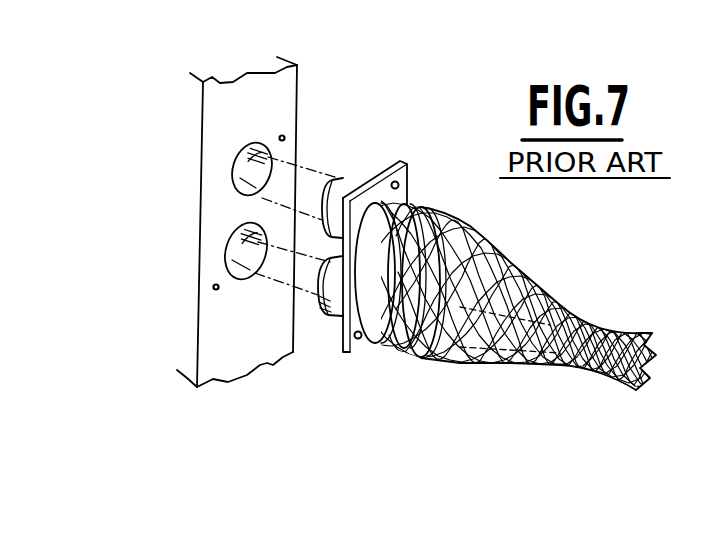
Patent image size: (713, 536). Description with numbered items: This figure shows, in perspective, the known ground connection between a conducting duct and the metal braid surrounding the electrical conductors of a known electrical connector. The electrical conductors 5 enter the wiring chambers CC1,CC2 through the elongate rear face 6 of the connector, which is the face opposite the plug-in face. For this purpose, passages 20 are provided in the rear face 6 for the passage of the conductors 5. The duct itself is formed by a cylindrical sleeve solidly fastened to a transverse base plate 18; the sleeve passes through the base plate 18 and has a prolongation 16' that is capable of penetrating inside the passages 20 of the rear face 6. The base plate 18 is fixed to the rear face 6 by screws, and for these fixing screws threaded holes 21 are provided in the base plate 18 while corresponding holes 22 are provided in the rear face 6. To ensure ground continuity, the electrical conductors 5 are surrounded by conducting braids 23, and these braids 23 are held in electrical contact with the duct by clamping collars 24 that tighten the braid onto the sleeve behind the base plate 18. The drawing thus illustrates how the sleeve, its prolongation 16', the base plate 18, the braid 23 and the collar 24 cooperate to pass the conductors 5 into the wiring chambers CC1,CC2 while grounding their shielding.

The wiring chambers CC1,CC2 is at (190, 112).
The electrical conductors 5 is at (263, 199).
The elongate rear face 6 is at (256, 357).
The passages 20 is at (230, 243).
The holes 22 is at (285, 138).
The prolongation 16' is at (355, 238).
The base plate 18 is at (400, 192).
The holes 21 is at (398, 183).
The conducting braids 23 is at (532, 323).
The clamping collars 24 is at (400, 347).